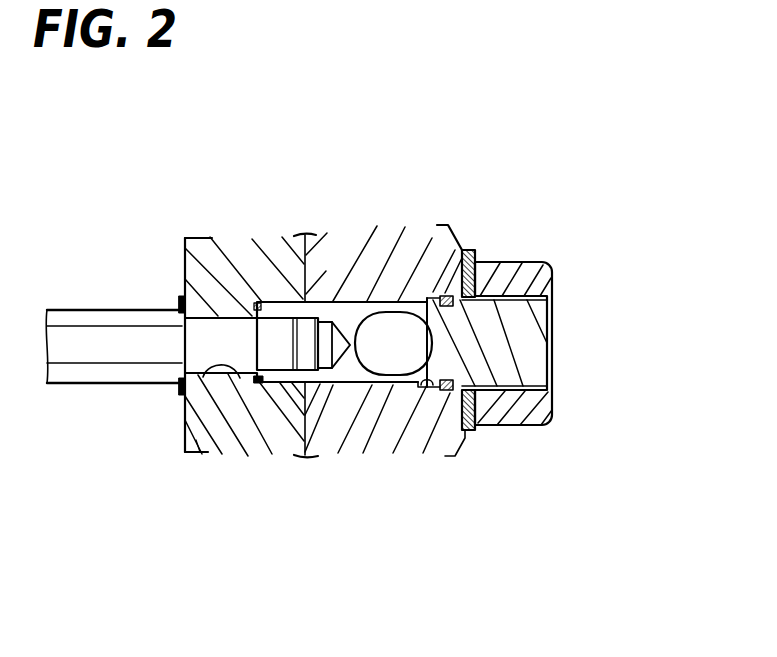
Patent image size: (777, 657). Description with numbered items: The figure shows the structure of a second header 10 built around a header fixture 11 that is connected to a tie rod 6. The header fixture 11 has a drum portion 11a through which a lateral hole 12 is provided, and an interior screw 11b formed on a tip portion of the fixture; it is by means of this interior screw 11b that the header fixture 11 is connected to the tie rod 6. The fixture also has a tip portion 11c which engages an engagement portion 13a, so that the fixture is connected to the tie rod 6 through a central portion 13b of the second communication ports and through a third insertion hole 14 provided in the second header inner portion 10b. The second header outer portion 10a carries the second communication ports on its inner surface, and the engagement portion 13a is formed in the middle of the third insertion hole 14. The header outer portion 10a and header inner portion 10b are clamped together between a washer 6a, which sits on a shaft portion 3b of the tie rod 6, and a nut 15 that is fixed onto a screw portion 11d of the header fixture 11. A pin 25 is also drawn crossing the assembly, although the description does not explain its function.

The second header 10 is at (403, 104).
The second header outer portion 10a is at (327, 437).
The second header inner portion 10b is at (199, 452).
The header fixture 11 is at (437, 302).
The drum portion 11a is at (365, 301).
The interior screw 11b is at (258, 323).
The tip portion 11c is at (285, 382).
The screw portion 11d is at (530, 325).
The lateral hole 12 is at (387, 363).
The engagement portion 13a is at (422, 394).
The central portion 13b is at (264, 376).
The third insertion hole 14 is at (236, 378).
The nut 15 is at (520, 261).
The pin 25 is at (308, 297).
The shaft portion 3b is at (73, 318).
The tie rod 6 is at (73, 379).
The washer 6a is at (181, 297).